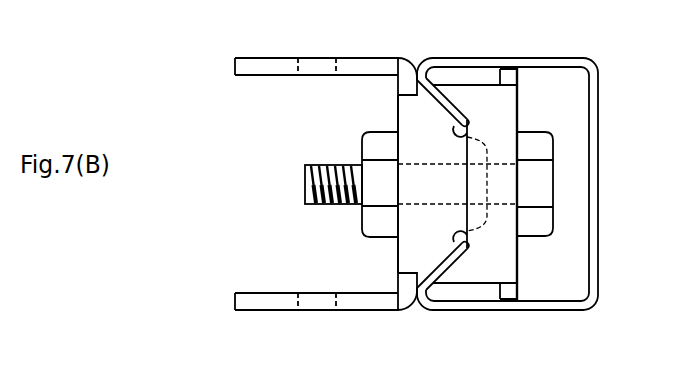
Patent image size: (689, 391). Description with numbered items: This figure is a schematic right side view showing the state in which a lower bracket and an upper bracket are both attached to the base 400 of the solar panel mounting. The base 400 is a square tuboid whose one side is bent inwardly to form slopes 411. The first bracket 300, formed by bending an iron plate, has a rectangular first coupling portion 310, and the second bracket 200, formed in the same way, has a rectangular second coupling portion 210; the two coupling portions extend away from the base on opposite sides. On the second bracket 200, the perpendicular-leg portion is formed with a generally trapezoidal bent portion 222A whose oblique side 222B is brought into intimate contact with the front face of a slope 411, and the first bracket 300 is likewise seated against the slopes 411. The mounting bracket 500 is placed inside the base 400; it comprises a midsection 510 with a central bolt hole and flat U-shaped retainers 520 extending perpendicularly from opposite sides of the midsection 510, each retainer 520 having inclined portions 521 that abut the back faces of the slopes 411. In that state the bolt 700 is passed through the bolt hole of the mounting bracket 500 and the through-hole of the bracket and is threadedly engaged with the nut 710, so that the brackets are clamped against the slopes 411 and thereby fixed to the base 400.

The second bracket 200 is at (329, 225).
The second coupling portion 210 is at (268, 302).
The bent portion 222A is at (413, 253).
The oblique side 222B is at (440, 97).
The first bracket 300 is at (326, 99).
The first coupling portion 310 is at (271, 57).
The base 400 is at (592, 63).
The slope 411 is at (462, 88).
The mounting bracket 500 is at (517, 117).
The midsection 510 is at (520, 290).
The retainer 520 is at (507, 257).
The inclined portion 521 is at (467, 138).
The bolt 700 is at (537, 184).
The nut 710 is at (378, 147).